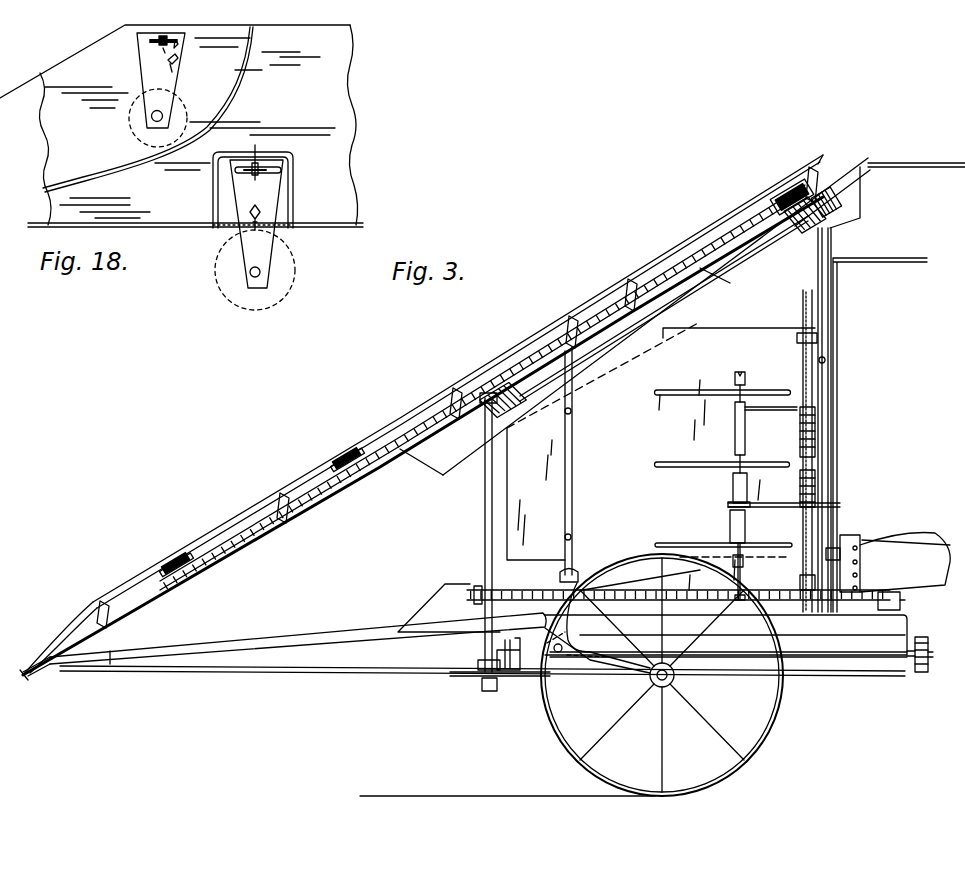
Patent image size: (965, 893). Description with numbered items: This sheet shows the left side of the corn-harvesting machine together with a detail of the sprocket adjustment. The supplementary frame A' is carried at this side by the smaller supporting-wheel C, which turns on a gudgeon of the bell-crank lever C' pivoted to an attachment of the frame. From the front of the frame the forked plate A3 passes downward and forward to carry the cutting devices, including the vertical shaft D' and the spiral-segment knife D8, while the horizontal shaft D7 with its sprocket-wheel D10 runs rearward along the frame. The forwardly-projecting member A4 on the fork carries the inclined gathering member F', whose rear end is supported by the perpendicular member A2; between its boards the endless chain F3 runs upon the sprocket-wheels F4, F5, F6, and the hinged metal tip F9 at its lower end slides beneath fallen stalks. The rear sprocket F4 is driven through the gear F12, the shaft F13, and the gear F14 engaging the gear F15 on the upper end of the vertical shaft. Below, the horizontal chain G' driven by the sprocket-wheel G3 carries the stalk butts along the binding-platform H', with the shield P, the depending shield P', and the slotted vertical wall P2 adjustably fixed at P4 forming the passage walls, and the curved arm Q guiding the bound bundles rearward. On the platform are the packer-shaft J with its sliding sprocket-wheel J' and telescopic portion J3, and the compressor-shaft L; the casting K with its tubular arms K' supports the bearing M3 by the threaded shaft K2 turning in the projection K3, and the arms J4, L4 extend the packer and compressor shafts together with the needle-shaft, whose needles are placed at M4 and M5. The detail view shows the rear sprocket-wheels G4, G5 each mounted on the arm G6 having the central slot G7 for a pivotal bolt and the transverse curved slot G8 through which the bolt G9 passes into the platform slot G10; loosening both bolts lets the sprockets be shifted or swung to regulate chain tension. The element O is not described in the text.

In FIG. 18, the rear sprocket-wheel G4 is at (132, 132).
In FIG. 18, the rear sprocket-wheel G5 is at (296, 248).
In FIG. 3, the rear sprocket-wheel G5 is at (870, 590).
In FIG. 18, the arm or plate G6 is at (148, 70).
In FIG. 18, the central slot G7 is at (168, 68).
In FIG. 18, the transverse curved slot G8 is at (270, 165).
In FIG. 18, the bolt G9 is at (160, 40).
In FIG. 18, the platform slot G10 is at (180, 42).
In FIG. 18, the binding-platform H' is at (192, 162).
In FIG. 3, the binding-platform H' is at (895, 571).
In FIG. 3, the inclined member F' is at (423, 415).
In FIG. 3, the endless sprocket-chain F3 is at (432, 384).
In FIG. 3, the rear sprocket-wheel F4 is at (795, 190).
In FIG. 3, the sprocket-wheel F5 is at (347, 452).
In FIG. 3, the sprocket-wheel F6 is at (176, 558).
In FIG. 3, the metal tip F9 is at (26, 678).
In FIG. 3, the gear F12 is at (808, 250).
In FIG. 3, the shaft F13 is at (720, 278).
In FIG. 3, the gear F14 is at (515, 420).
In FIG. 3, the gear F15 is at (480, 420).
In FIG. 3, the curved arm Q is at (936, 163).
In FIG. 3, the shield P' is at (667, 316).
In FIG. 3, the vertical wall P2 is at (649, 485).
In FIG. 3, the adjustable fixing P4 is at (825, 360).
In FIG. 3, the perpendicular member A2 is at (832, 228).
In FIG. 3, the forked plate A3 is at (528, 676).
In FIG. 3, the forwardly-projecting member A4 is at (330, 672).
In FIG. 3, the supplementary frame A' is at (726, 635).
In FIG. 3, the compressor-shaft L is at (838, 426).
In FIG. 3, the arm L4 is at (842, 506).
In FIG. 3, the bearing M3 is at (800, 414).
In FIG. 3, the needle location M4 is at (815, 404).
In FIG. 3, the second needle location M5 is at (812, 338).
In FIG. 3, the packer-shaft J is at (713, 580).
In FIG. 3, the sprocket-wheel J' is at (749, 585).
In FIG. 3, the telescopic portion J3 is at (733, 482).
In FIG. 3, the arm J4 is at (768, 520).
In FIG. 3, the casting K is at (651, 537).
In FIG. 3, the tubular arm K' is at (793, 488).
In FIG. 3, the threaded shaft K2 is at (802, 580).
In FIG. 3, the projection K3 is at (806, 540).
In FIG. 3, the bracket O is at (838, 556).
In FIG. 3, the horizontal sprocket-chain G' is at (678, 581).
In FIG. 3, the sprocket-wheel G3 is at (478, 588).
In FIG. 3, the shield P is at (549, 601).
In FIG. 3, the vertical shaft D' is at (472, 535).
In FIG. 3, the horizontal shaft D7 is at (858, 660).
In FIG. 3, the knife D8 is at (470, 678).
In FIG. 3, the sprocket-wheel D10 is at (922, 674).
In FIG. 3, the supporting-wheel C is at (579, 675).
In FIG. 3, the bell-crank lever C' is at (597, 641).